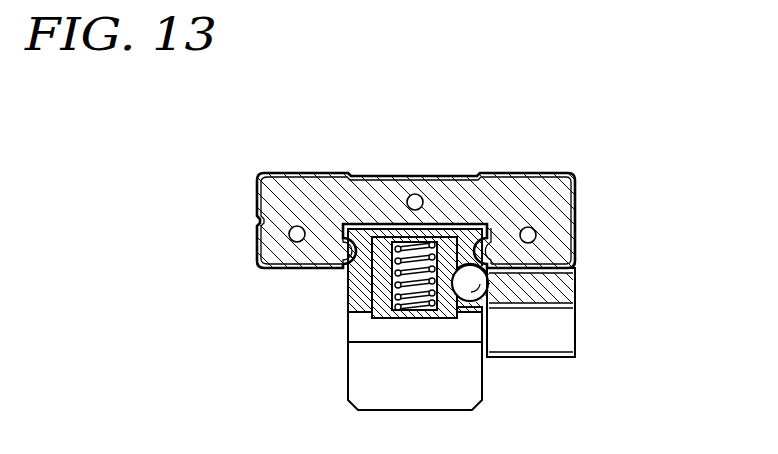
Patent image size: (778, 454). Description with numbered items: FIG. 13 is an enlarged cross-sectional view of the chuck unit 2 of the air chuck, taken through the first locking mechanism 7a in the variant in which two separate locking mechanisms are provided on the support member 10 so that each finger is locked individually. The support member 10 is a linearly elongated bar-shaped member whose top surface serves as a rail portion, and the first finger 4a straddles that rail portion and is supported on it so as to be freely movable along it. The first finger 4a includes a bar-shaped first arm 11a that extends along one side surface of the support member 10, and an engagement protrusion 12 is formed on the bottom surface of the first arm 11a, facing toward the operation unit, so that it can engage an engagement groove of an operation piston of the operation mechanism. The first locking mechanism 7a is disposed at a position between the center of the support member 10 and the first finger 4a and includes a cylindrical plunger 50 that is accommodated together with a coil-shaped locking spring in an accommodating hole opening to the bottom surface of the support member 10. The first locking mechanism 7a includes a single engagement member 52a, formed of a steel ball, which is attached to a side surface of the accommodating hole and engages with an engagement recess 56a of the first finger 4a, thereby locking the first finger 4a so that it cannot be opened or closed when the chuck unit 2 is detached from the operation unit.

The chuck unit 2 is at (612, 167).
The first finger 4a is at (308, 197).
The first locking mechanism 7a is at (434, 216).
The support member 10 is at (377, 230).
The plunger 50 is at (445, 262).
The engagement member 52a is at (487, 274).
The first arm 11a is at (548, 287).
The engagement recess 56a is at (465, 286).
The engagement protrusion 12 is at (528, 357).